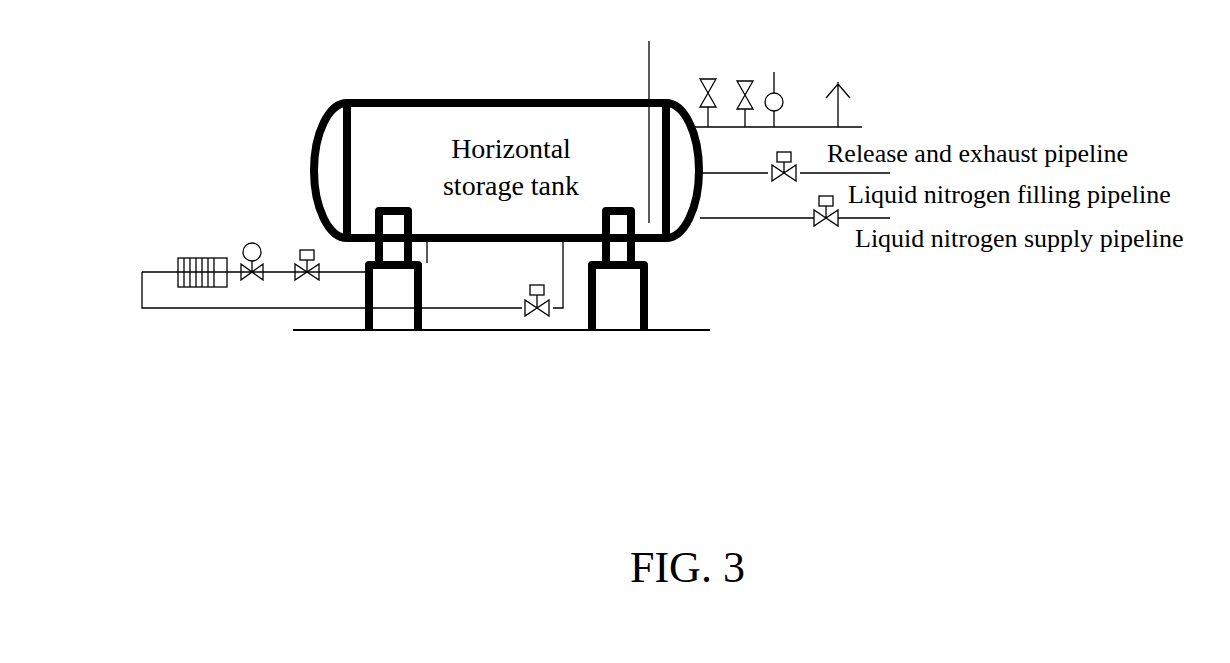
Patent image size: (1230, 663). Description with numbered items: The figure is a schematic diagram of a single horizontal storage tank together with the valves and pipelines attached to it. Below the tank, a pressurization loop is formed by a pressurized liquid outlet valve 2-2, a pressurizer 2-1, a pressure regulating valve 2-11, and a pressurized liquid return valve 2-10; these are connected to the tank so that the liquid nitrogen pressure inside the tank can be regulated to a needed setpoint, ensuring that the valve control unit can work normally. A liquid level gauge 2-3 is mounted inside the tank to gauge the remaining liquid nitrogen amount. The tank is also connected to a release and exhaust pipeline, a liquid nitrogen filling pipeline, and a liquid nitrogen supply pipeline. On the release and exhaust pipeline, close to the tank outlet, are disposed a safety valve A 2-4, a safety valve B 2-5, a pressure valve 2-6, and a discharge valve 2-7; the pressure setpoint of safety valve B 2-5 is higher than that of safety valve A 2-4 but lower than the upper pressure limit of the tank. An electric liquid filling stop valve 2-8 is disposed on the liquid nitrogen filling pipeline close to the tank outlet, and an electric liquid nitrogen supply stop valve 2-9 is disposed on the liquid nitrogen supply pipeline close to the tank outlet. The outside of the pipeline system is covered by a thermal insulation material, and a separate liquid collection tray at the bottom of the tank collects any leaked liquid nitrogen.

The pressurizer 2-1 is at (203, 285).
The pressurized liquid outlet valve 2-2 is at (538, 325).
The liquid level gauge 2-3 is at (651, 62).
The safety valve A 2-4 is at (707, 80).
The safety valve B 2-5 is at (744, 83).
The pressure valve 2-6 is at (776, 72).
The discharge valve 2-7 is at (836, 81).
The electric liquid filling stop valve 2-8 is at (770, 191).
The electric liquid nitrogen supply stop valve 2-9 is at (829, 227).
The pressurized liquid return valve 2-10 is at (313, 284).
The pressure regulating valve 2-11 is at (255, 236).